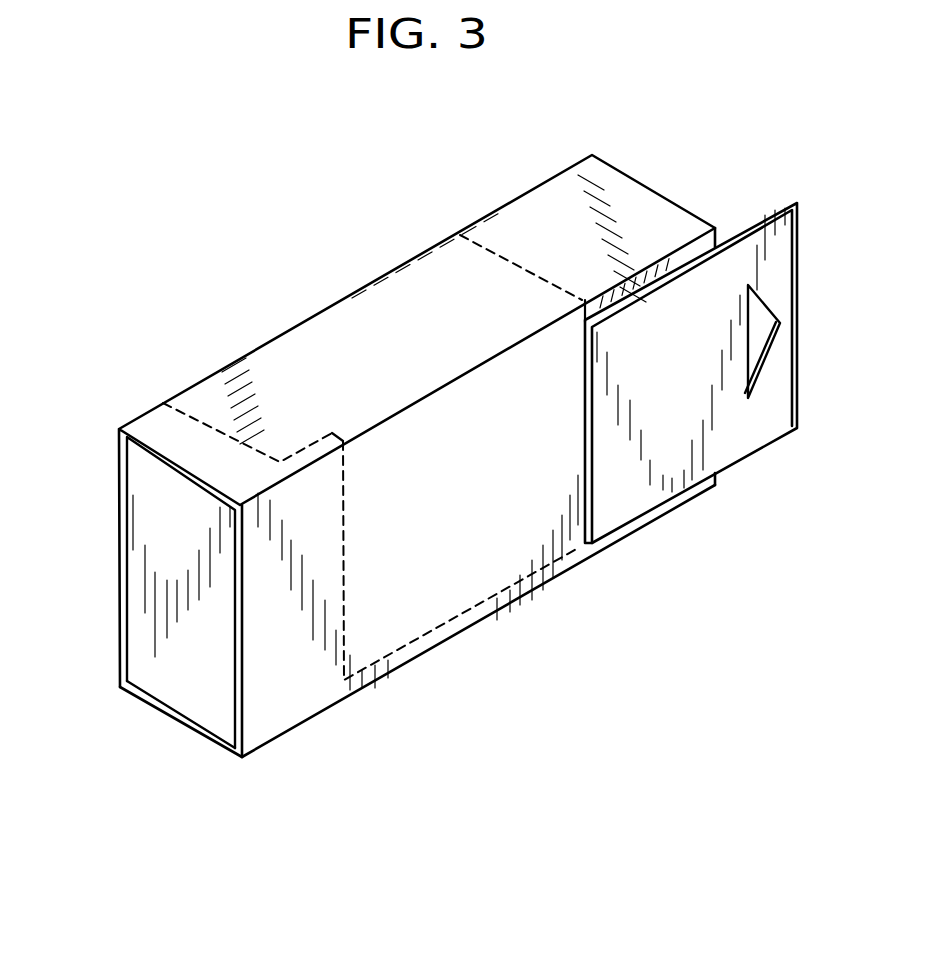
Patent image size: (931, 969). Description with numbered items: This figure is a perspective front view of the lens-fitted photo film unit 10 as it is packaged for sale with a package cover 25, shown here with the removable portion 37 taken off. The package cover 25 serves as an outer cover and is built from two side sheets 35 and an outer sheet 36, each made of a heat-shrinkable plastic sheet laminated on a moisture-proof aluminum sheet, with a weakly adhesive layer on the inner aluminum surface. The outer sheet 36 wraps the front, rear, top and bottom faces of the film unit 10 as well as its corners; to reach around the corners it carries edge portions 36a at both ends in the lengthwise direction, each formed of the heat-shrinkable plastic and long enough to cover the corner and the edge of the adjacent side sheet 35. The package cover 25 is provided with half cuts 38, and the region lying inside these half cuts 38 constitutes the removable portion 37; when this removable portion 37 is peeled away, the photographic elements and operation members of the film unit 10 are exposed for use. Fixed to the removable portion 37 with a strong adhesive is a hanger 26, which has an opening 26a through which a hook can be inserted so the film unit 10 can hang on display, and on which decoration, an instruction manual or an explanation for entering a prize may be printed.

The film unit 10 is at (443, 240).
The package cover 25 is at (322, 333).
The hanger 26 is at (763, 255).
The opening 26a is at (758, 350).
The side sheet 35 is at (145, 578).
The outer sheet 36 is at (153, 423).
The edge portion 36a is at (187, 720).
The removable portion 37 is at (487, 568).
The half cuts 38 is at (420, 637).